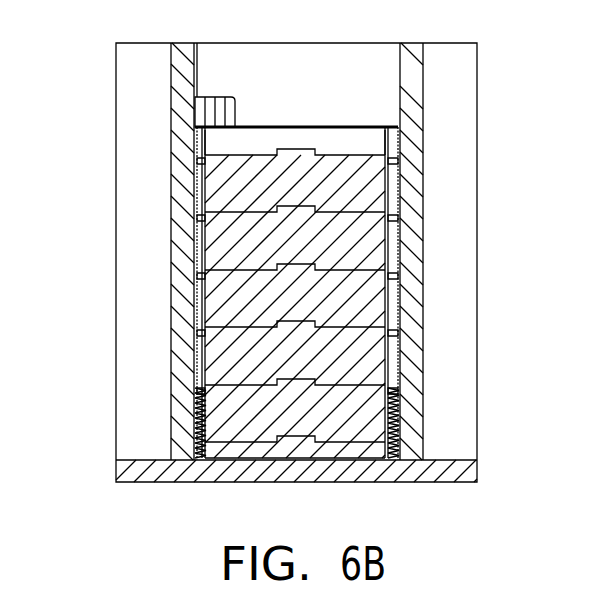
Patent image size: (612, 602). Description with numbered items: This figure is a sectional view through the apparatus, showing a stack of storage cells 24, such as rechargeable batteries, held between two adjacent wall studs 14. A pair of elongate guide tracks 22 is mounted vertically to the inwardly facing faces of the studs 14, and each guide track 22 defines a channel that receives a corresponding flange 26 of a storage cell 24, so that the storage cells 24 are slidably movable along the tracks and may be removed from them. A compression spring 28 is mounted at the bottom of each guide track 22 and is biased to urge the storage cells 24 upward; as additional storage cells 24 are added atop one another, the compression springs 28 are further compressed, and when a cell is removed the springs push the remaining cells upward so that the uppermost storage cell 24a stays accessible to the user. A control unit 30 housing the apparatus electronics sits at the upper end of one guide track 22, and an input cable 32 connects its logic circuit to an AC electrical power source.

The stud 14 is at (171, 78).
The guide track 22 is at (203, 187).
The storage cell 24 is at (210, 355).
The uppermost storage cell 24a is at (331, 152).
The flange 26 is at (193, 157).
The compression spring 28 is at (196, 418).
The control unit 30 is at (236, 103).
The input cable 32 is at (198, 70).